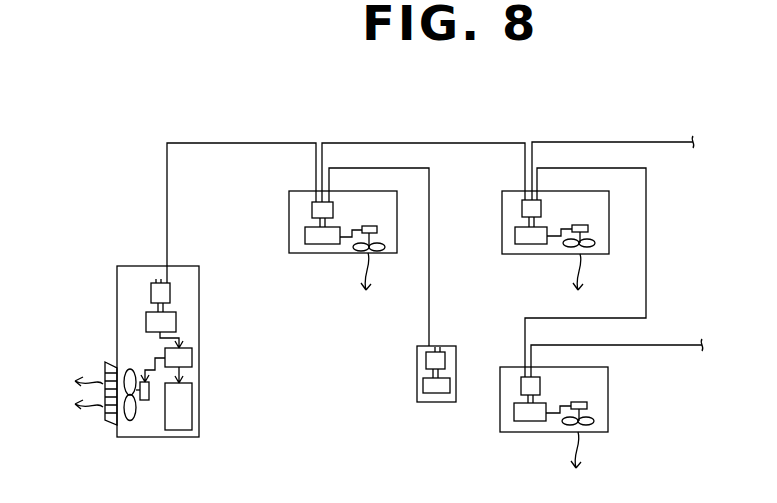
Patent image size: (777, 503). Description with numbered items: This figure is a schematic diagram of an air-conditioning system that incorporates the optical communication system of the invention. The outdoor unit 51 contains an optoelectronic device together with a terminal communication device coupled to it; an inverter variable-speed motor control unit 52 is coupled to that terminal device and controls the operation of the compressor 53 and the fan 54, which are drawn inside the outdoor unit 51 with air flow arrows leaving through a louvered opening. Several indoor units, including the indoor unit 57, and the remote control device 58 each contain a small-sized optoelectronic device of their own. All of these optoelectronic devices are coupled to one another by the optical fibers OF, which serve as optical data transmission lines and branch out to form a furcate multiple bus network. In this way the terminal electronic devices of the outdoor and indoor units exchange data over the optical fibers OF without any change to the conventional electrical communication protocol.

The optical fiber OF is at (242, 143).
The outdoor unit 51 is at (117, 313).
The inverter variable-speed motor control unit 52 is at (192, 357).
The compressor 53 is at (192, 405).
The fan 54 is at (142, 437).
The indoor unit 57 is at (608, 410).
The remote control device 58 is at (417, 372).